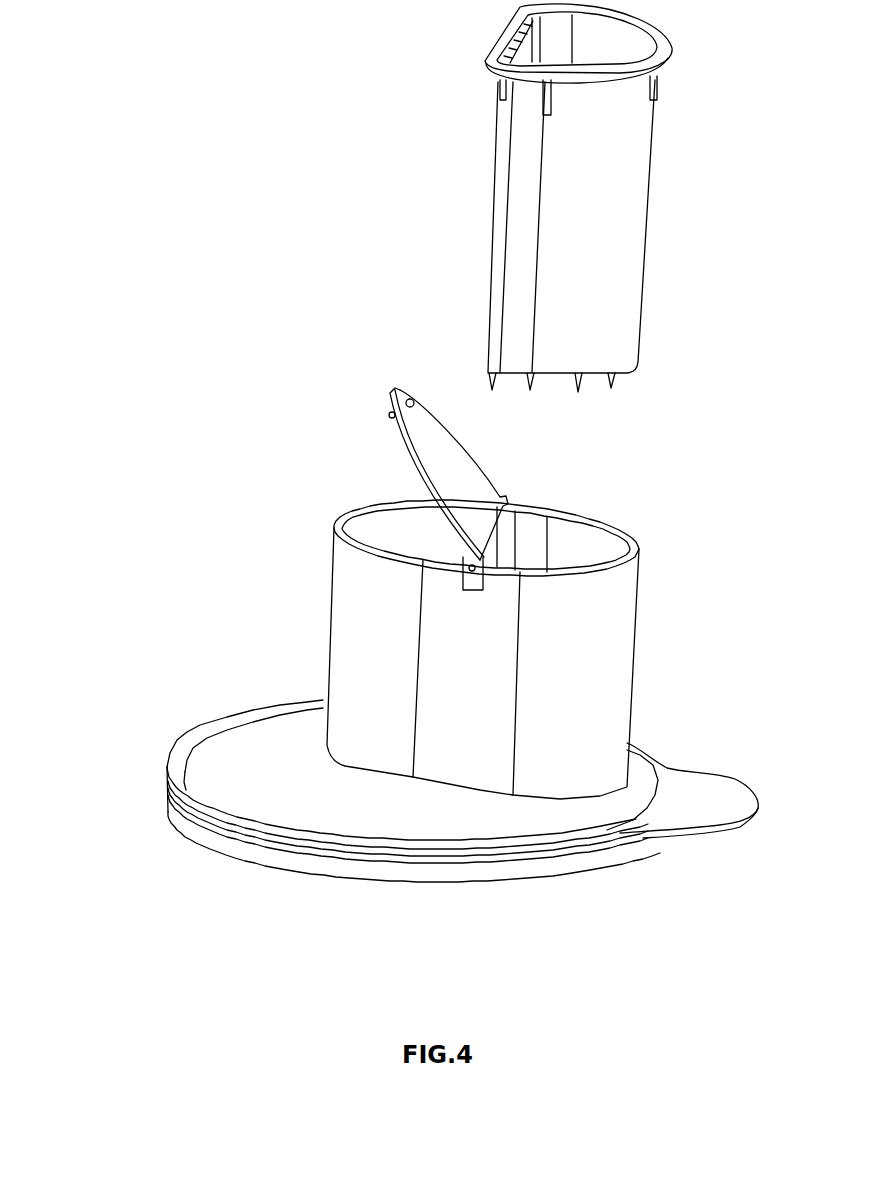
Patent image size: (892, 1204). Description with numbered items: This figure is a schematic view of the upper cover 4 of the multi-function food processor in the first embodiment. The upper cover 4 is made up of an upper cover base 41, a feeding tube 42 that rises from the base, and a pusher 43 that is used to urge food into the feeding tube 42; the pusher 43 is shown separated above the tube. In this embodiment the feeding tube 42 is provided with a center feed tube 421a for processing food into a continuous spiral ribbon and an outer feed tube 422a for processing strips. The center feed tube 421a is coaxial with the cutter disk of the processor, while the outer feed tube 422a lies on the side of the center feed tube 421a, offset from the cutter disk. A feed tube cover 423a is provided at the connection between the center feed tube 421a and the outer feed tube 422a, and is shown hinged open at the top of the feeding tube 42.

The upper cover 4 is at (695, 590).
The upper cover base 41 is at (492, 825).
The feeding tube 42 is at (188, 417).
The center feed tube 421a is at (383, 662).
The outer feed tube 422a is at (560, 695).
The feed tube cover 423a is at (453, 479).
The pusher 43 is at (593, 250).